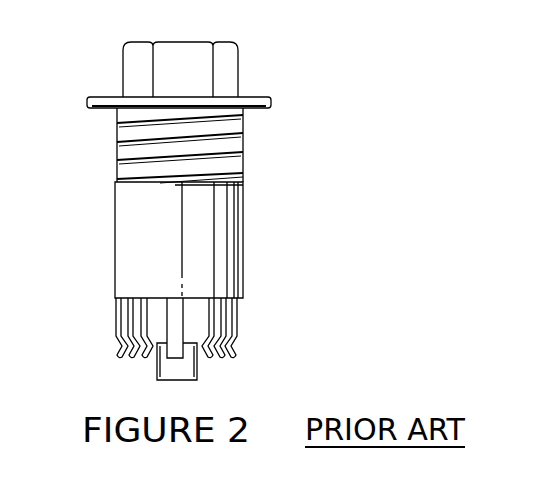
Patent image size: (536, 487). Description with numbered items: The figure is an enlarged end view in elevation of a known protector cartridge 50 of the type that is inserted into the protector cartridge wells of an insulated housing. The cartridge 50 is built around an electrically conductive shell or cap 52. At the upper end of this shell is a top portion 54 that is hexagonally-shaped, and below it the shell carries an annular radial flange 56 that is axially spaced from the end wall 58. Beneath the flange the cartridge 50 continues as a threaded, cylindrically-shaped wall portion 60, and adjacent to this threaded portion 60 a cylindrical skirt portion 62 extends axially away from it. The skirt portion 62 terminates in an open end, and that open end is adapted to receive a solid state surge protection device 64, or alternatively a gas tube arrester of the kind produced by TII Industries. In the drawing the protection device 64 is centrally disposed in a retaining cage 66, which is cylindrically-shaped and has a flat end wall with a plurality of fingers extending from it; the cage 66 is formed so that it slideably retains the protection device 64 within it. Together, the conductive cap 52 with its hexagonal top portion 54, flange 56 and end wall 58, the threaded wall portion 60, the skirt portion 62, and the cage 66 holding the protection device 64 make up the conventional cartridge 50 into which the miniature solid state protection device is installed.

The protector cartridge 50 is at (250, 67).
The electrically conductive shell or cap 52 is at (111, 201).
The top portion 54 is at (132, 70).
The annular radial flange 56 is at (92, 102).
The end wall 58 is at (190, 58).
The threaded cylindrically-shaped wall portion 60 is at (245, 135).
The cylindrical skirt portion 62 is at (132, 248).
The solid state surge protection device 64 is at (160, 317).
The retaining cage 66 is at (246, 323).